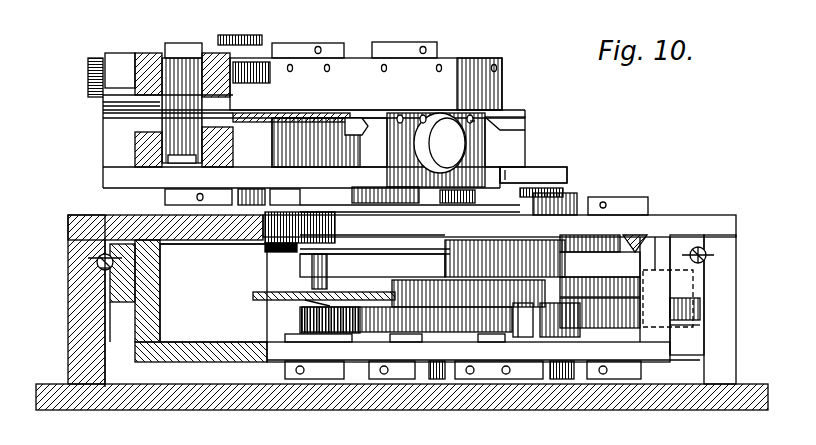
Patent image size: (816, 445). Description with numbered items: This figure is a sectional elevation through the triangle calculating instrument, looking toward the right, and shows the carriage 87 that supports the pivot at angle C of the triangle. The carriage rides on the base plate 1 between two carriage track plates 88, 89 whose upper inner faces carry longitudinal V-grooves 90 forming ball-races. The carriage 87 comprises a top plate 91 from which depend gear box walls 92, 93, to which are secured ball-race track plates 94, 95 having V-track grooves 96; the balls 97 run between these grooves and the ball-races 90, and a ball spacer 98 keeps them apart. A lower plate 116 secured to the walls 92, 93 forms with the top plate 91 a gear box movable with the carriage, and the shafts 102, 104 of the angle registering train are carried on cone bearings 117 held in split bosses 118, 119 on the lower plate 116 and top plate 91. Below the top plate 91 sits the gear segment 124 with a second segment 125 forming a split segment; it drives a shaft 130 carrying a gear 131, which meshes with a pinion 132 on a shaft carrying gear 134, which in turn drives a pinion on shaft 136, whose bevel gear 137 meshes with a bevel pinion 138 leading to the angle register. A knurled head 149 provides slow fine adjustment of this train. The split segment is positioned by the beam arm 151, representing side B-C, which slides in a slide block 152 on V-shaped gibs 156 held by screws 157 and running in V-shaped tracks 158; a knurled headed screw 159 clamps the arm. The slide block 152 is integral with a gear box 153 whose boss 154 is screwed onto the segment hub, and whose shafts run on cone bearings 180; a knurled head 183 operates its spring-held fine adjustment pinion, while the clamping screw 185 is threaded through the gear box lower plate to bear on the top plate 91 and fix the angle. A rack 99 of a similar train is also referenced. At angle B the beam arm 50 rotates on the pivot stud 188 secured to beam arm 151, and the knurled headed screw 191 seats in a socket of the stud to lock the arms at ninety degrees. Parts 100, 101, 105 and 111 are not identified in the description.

The base plate 1 is at (640, 392).
The beam arm 50 is at (145, 56).
The carriage 87 is at (110, 222).
The carriage track plate 88 is at (70, 320).
The carriage track plate 89 is at (730, 348).
The longitudinal V-grooves 90 is at (96, 262).
The top plate 91 is at (365, 272).
The gear box wall 92 is at (138, 296).
The gear box wall 93 is at (680, 325).
The ball-race track plate 94 is at (124, 302).
The ball-race track plate 95 is at (690, 235).
The V-track grooves 96 is at (708, 222).
The balls 97 is at (100, 256).
The ball spacer 98 is at (100, 268).
The rack 99 is at (702, 308).
The bearing sleeve 100 is at (690, 328).
The hidden bracket 101 is at (648, 252).
The shaft 102 is at (672, 225).
The shaft 104 is at (555, 336).
The block 105 is at (616, 238).
The bar 111 is at (424, 249).
The lower plate 116 is at (232, 326).
The cone bearings 117 is at (575, 330).
The split bosses 118 is at (560, 395).
The split bosses 119 is at (630, 200).
The gear segment 124 is at (392, 212).
The second segment 125 is at (300, 248).
The shaft 130 is at (500, 333).
The gear 131 is at (528, 335).
The pinion 132 is at (428, 270).
The gear 134 is at (300, 322).
The shaft 136 is at (312, 280).
The bevel gear 137 is at (254, 296).
The bevel pinion 138 is at (300, 303).
The knurled head 149 is at (520, 158).
The beam arm 151 is at (135, 150).
The slide block 152 is at (373, 118).
The gear box 153 is at (452, 66).
The boss 154 is at (368, 192).
The V-shaped gibs 156 is at (356, 120).
The screws 157 is at (428, 118).
The V-shaped tracks 158 is at (140, 112).
The knurled headed screw 159 is at (476, 124).
The cone bearings 180 is at (400, 34).
The knurled head 183 is at (278, 40).
The screw 185 is at (295, 48).
The pivot stud 188 is at (168, 62).
The knurled headed screw 191 is at (88, 72).
The angle B is at (188, 44).